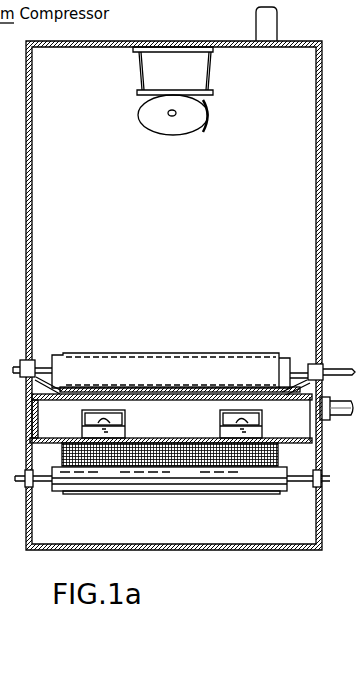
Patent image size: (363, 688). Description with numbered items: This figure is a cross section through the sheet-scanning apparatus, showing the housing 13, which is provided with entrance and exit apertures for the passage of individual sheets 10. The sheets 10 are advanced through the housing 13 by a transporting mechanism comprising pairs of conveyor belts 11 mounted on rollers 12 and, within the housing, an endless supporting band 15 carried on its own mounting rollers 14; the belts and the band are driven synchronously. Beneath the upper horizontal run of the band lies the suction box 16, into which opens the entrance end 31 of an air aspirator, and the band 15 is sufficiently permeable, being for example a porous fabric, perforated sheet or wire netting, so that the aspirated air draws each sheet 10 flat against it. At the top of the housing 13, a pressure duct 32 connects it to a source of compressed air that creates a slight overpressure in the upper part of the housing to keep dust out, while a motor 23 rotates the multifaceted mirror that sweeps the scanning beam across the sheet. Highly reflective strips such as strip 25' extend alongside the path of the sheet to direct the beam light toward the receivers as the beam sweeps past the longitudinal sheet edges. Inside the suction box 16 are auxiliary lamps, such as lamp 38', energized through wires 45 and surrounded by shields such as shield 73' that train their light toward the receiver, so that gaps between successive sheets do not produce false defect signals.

The housing 13 is at (322, 238).
The pressure duct 32 is at (268, 25).
The motor 23 is at (196, 113).
The conveyor belts 11 is at (189, 354).
The mounting rollers 12 is at (281, 357).
The highly reflective strip 25' is at (57, 360).
The endless supporting band 15 is at (228, 391).
The sheets 10 is at (253, 393).
The suction box 16 is at (34, 420).
The auxiliary lamp 38' is at (124, 423).
The shield 73' is at (67, 417).
The entrance end of air aspirator 31 is at (344, 412).
The wires 45 is at (312, 438).
The mounting rollers 14 is at (160, 493).